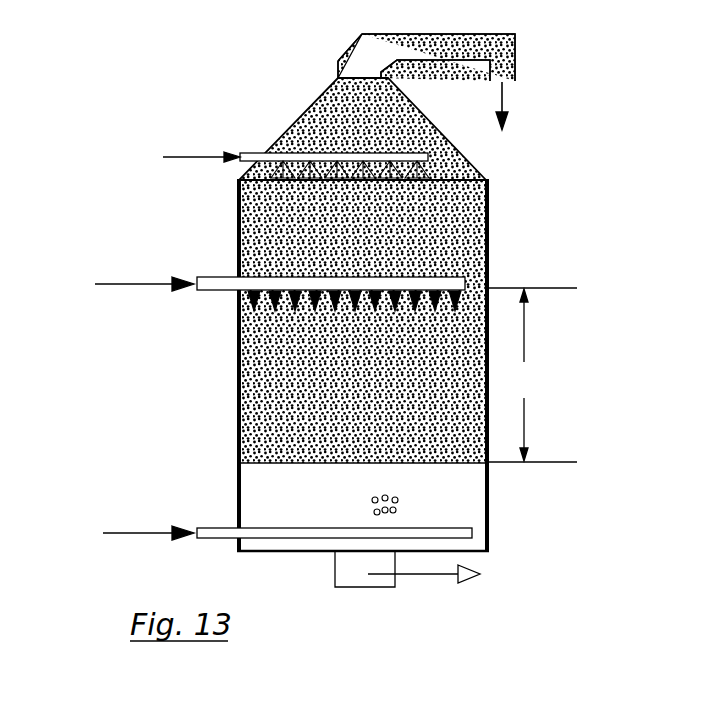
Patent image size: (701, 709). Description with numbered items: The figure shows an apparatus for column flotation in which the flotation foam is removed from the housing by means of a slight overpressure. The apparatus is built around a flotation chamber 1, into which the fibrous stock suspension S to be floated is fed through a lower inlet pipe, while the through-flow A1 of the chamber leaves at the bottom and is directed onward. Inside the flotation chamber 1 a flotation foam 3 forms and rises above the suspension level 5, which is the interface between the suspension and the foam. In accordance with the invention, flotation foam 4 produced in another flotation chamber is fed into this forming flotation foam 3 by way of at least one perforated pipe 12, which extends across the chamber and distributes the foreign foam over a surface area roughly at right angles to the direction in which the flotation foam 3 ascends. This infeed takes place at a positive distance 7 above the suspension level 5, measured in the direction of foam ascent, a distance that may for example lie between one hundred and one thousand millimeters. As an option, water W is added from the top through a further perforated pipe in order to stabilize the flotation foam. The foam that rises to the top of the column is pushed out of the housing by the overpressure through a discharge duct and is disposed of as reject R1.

The flotation chamber 1 is at (332, 293).
The flotation foam 3 is at (363, 321).
The perforated pipe 12 is at (219, 279).
The flotation foam 4 is at (168, 276).
The water W is at (226, 152).
The reject R1 is at (505, 104).
The distance 7 is at (532, 375).
The suspension level 5 is at (467, 465).
The fibrous stock suspension S is at (163, 530).
The through-flow A1 is at (481, 578).